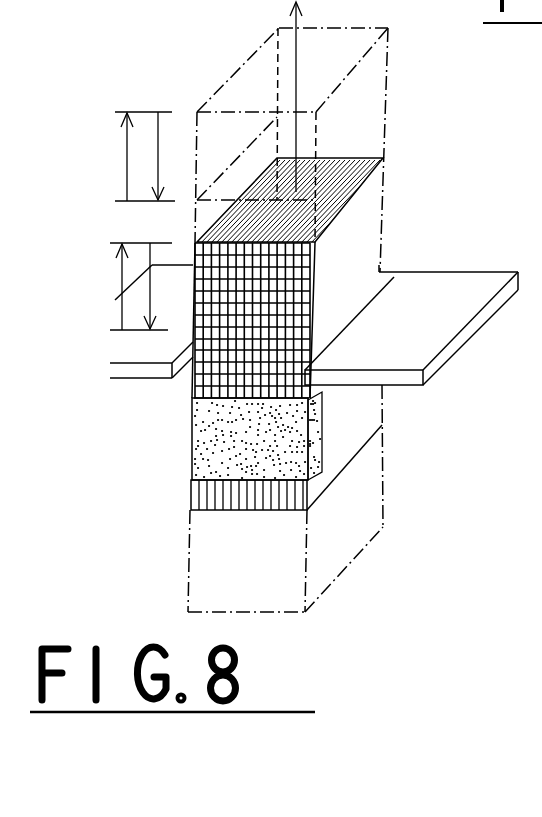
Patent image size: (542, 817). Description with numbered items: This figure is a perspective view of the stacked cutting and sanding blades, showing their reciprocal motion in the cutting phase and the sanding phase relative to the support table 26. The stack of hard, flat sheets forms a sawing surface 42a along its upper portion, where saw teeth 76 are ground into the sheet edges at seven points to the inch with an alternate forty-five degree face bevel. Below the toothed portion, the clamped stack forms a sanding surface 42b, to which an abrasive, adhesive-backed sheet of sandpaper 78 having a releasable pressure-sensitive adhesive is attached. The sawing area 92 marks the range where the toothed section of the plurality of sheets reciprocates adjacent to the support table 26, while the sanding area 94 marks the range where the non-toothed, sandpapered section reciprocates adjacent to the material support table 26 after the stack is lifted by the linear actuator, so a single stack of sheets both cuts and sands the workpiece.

The support table 26 is at (413, 350).
The sawing surface 42a is at (357, 212).
The sanding surface 42b is at (345, 408).
The saw teeth 76 is at (290, 250).
The sandpaper 78 is at (285, 439).
The sawing area 92 is at (137, 288).
The sanding area 94 is at (142, 153).